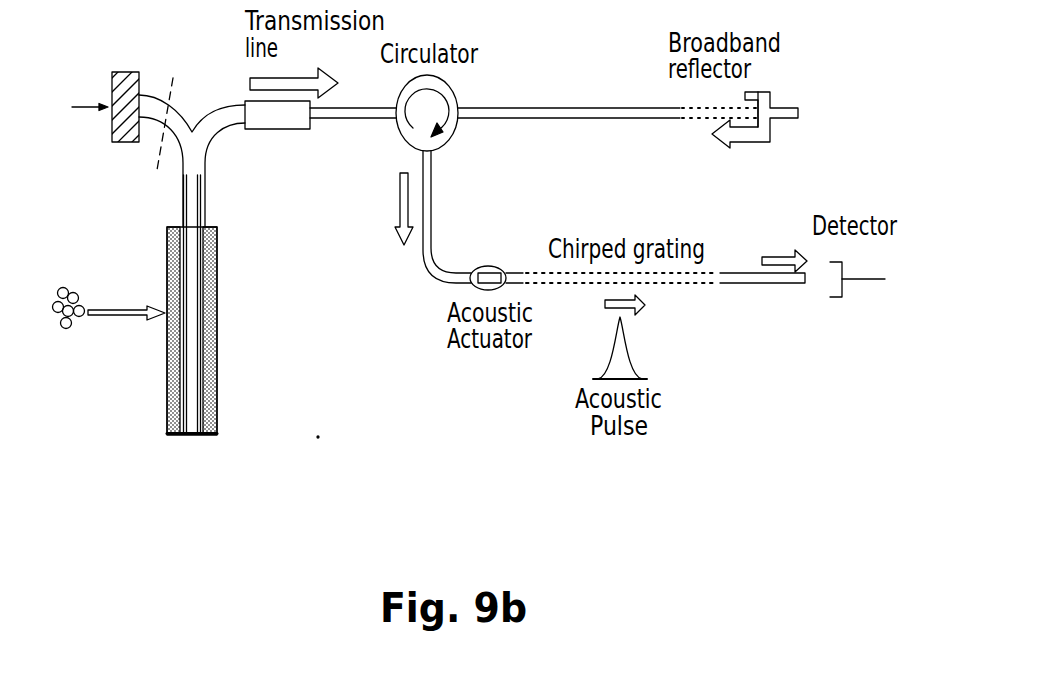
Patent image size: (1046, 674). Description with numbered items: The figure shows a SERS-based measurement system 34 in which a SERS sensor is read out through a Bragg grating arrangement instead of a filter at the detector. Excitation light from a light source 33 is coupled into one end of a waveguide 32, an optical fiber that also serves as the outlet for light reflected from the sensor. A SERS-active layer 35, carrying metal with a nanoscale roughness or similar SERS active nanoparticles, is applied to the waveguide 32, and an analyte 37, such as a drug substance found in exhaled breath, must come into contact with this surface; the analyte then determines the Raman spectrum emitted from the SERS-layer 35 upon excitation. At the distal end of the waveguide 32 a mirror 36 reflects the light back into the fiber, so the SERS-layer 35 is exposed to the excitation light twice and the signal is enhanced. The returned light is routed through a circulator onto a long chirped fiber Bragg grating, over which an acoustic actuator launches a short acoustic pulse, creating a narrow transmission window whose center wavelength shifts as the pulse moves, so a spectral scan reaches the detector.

The waveguide 32 is at (216, 200).
The light source 33 is at (155, 57).
The SERS-based measurement system 34 is at (334, 452).
The SERS-active layer 35 is at (228, 328).
The mirror 36 is at (197, 447).
The analyte 37 is at (62, 350).